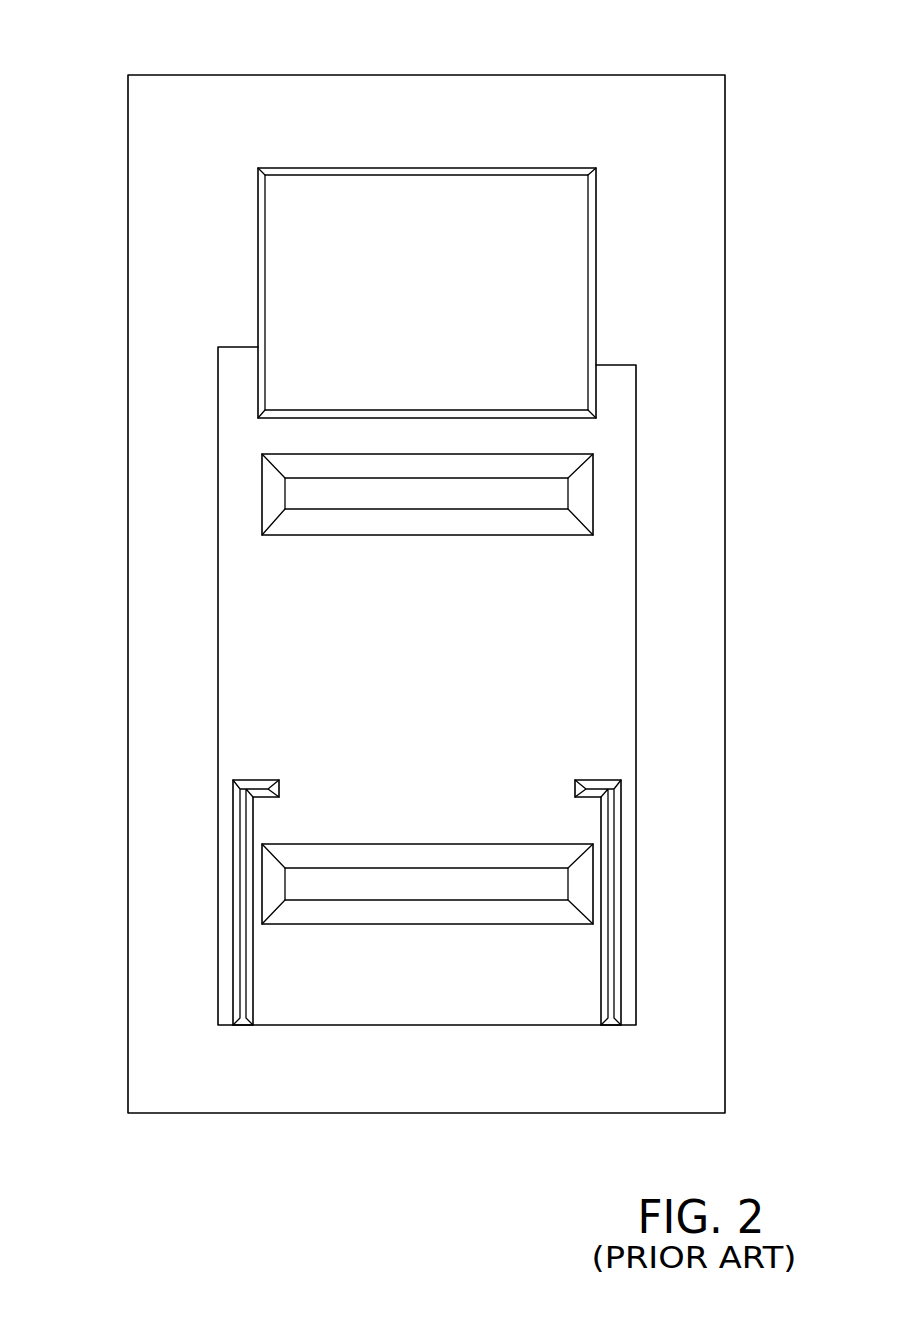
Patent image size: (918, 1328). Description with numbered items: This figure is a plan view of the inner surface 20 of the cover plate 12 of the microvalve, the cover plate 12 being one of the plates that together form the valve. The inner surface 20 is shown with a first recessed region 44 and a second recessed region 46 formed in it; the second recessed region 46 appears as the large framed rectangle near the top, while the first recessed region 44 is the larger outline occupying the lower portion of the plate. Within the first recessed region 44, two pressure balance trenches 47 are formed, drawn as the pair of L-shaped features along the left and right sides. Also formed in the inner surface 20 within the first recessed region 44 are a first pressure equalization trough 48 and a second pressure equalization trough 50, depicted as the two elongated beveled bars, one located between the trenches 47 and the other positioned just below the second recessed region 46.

The cover plate 12 is at (533, 75).
The inner surface 20 is at (668, 114).
The first recessed region 44 is at (241, 643).
The second recessed region 46 is at (298, 259).
The pressure balance trenches 47 is at (273, 782).
The first pressure equalization trough 48 is at (442, 886).
The second pressure equalization trough 50 is at (419, 498).